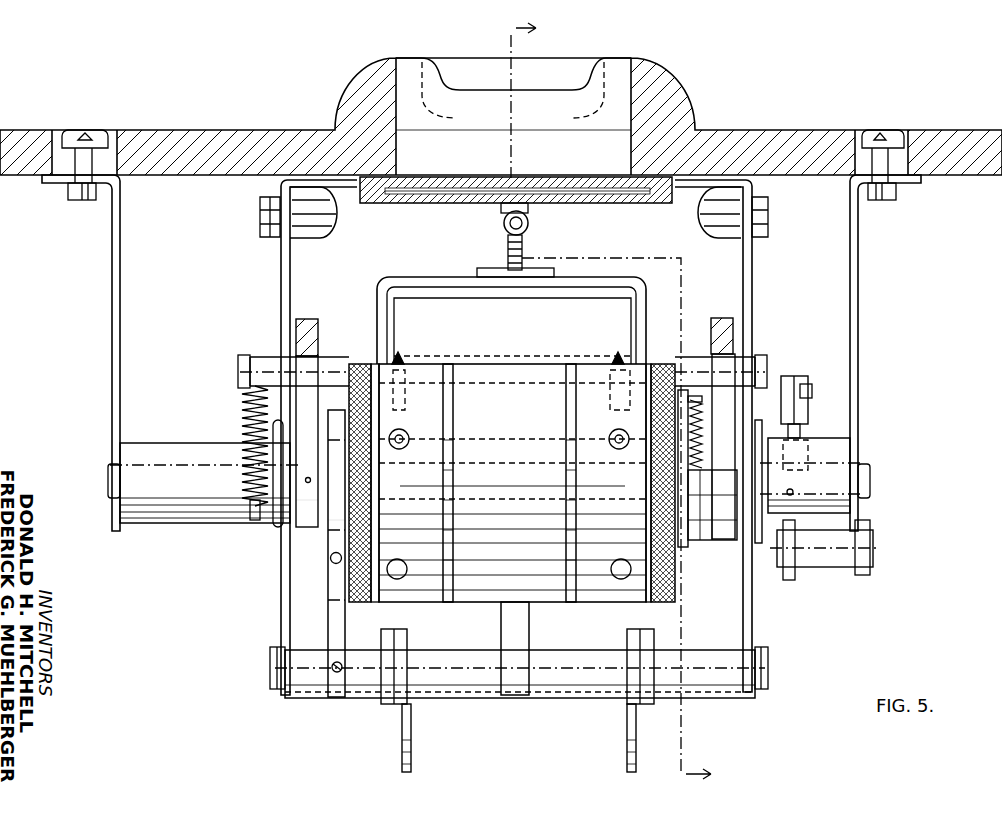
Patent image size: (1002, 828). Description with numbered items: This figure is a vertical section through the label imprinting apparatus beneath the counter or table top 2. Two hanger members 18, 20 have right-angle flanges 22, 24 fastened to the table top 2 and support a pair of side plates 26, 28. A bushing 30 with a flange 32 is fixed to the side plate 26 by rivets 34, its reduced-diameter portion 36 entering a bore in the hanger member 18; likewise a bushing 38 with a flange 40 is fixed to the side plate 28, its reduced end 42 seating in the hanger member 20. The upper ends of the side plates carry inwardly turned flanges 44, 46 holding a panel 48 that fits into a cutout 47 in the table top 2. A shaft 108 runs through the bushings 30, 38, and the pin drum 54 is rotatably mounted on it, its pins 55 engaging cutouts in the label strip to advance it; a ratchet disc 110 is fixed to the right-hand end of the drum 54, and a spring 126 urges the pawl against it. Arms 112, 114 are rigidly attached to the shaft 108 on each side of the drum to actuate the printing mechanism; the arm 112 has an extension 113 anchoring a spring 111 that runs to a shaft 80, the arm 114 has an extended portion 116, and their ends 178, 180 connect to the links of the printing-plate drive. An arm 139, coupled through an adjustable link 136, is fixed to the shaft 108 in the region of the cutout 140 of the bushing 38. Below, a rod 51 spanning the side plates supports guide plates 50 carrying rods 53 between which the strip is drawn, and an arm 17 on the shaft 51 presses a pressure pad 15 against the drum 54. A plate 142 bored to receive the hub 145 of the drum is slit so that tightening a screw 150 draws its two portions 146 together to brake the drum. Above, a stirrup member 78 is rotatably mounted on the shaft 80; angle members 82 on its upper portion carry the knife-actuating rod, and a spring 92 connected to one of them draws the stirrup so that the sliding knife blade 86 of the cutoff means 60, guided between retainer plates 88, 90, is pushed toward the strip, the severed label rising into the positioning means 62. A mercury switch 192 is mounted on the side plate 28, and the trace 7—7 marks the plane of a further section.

The table top 2 is at (48, 130).
The section line 7- 7 is at (599, 404).
The pressure pad 15 is at (476, 603).
The arm 17 is at (529, 618).
The hanger member 18 is at (110, 334).
The hanger member 20 is at (858, 334).
The right angle formed flange 22 is at (64, 195).
The right angle formed flange 24 is at (904, 195).
The side plate 26 is at (280, 334).
The side plate 28 is at (752, 334).
The bushing 30 is at (190, 524).
The flange 32 is at (281, 540).
The rivets 34 is at (272, 524).
The reduced diameter portion 36 is at (118, 505).
The bushing 38 is at (830, 440).
The flange 40 is at (760, 545).
The reduced diameter outer end portion 42 is at (860, 453).
The inwardly turned flange 44 is at (330, 202).
The inwardly turned flange 46 is at (706, 204).
The cutout 47 is at (114, 142).
The panel 48 is at (286, 132).
The guide plates 50 is at (402, 742).
The rod 51 is at (313, 693).
The rods 53 is at (455, 652).
The pin bearing drum 54 is at (507, 364).
The pins 55 is at (404, 358).
The cutoff means 60 is at (413, 229).
The severed label positioning means 62 is at (372, 70).
The stirrup member 78 is at (381, 292).
The shaft 80 is at (392, 332).
The angle members 82 is at (506, 253).
The sliding knife blade 86 is at (440, 200).
The retainer plate 88 is at (484, 182).
The retainer plate 90 is at (598, 200).
The spring 92 is at (528, 226).
The shaft 108 is at (106, 481).
The ratchet disc 110 is at (695, 536).
The spring 111 is at (240, 412).
The arm 112 is at (360, 362).
The extension 113 is at (300, 532).
The arm 114 is at (736, 402).
The extended portion 116 is at (716, 544).
The spring 126 is at (683, 390).
The adjustable link 136 is at (792, 376).
The arm 139 is at (812, 406).
The cutout portion 140 is at (810, 450).
The plate 142 is at (330, 597).
The hub 145 is at (380, 466).
The lever upper portion 146 is at (328, 526).
The screw 150 is at (330, 562).
The end 178 is at (308, 318).
The end 180 is at (718, 318).
The mercury switch 192 is at (262, 238).